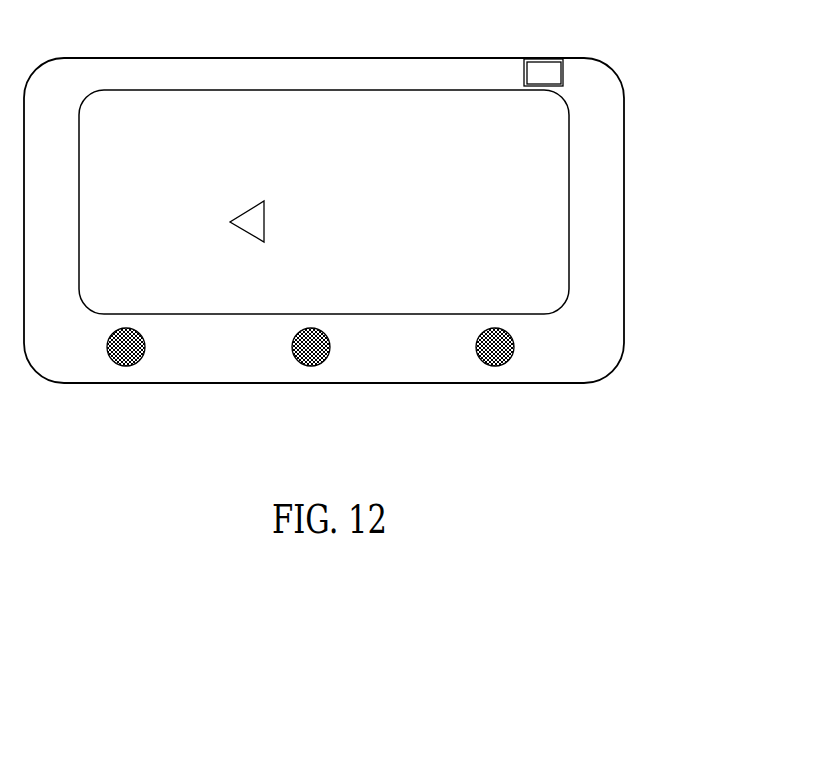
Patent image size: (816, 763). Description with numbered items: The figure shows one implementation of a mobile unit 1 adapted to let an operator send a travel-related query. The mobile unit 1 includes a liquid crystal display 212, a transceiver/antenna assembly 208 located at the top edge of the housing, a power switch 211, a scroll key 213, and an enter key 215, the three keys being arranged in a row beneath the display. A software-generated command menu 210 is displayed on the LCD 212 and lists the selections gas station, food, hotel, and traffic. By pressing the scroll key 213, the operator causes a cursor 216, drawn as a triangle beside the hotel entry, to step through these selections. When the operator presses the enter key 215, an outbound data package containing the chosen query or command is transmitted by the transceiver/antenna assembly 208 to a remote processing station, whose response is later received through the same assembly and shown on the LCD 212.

The mobile unit 1 is at (660, 198).
The transceiver/antenna assembly 208 is at (545, 58).
The command menu 210 is at (165, 130).
The liquid crystal display (LCD) 212 is at (365, 96).
The power switch 211 is at (128, 366).
The scroll key 213 is at (312, 366).
The enter key 215 is at (496, 366).
The cursor 216 is at (272, 228).